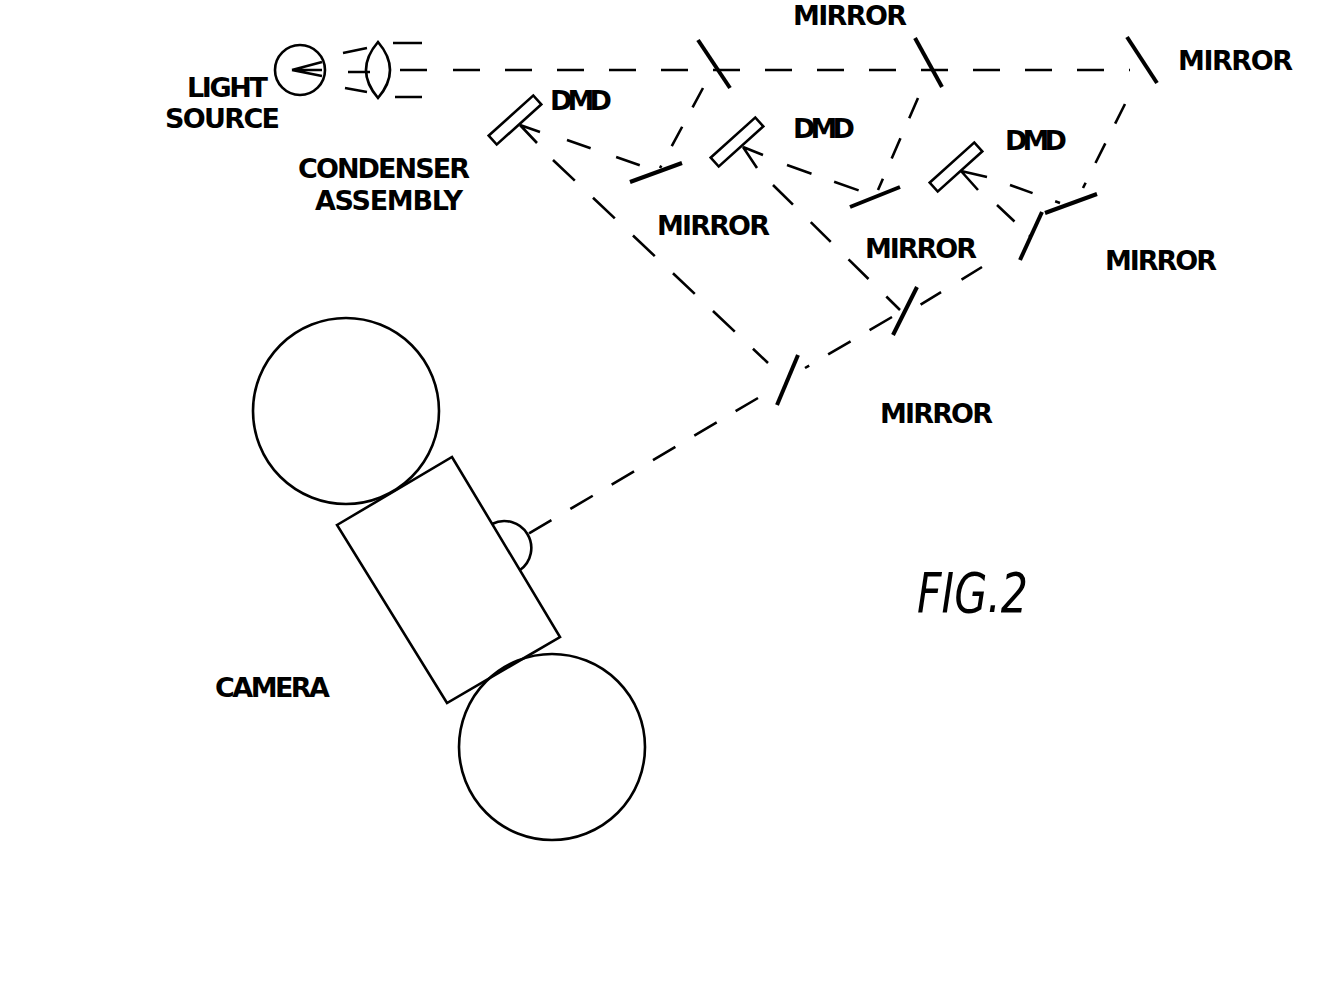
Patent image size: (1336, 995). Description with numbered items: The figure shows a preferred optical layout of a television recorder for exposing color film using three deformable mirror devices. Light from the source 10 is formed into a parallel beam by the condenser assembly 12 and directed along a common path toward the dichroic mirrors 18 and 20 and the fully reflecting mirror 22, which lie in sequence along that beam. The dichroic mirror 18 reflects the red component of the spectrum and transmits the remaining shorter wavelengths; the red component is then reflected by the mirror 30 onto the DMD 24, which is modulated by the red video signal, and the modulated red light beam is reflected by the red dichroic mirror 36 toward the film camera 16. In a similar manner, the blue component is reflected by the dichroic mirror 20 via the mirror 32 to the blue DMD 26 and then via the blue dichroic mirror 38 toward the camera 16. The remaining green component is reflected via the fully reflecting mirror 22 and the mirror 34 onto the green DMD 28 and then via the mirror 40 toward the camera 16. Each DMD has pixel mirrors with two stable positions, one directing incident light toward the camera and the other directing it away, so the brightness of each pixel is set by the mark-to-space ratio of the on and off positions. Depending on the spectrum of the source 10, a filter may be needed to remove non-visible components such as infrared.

The light source 10 is at (275, 69).
The condenser assembly 12 is at (377, 98).
The film camera 16 is at (387, 610).
The dichroic mirror 18 is at (707, 43).
The dichroic mirror 20 is at (923, 45).
The fully reflecting mirror 22 is at (1137, 44).
The DMD 24 is at (508, 115).
The blue DMD 26 is at (760, 123).
The green DMD 28 is at (973, 148).
The mirror 30 is at (663, 158).
The mirror 32 is at (889, 197).
The mirror 34 is at (1077, 200).
The red dichroic mirror 36 is at (787, 385).
The blue dichroic mirror 38 is at (907, 313).
The mirror 40 is at (1033, 240).